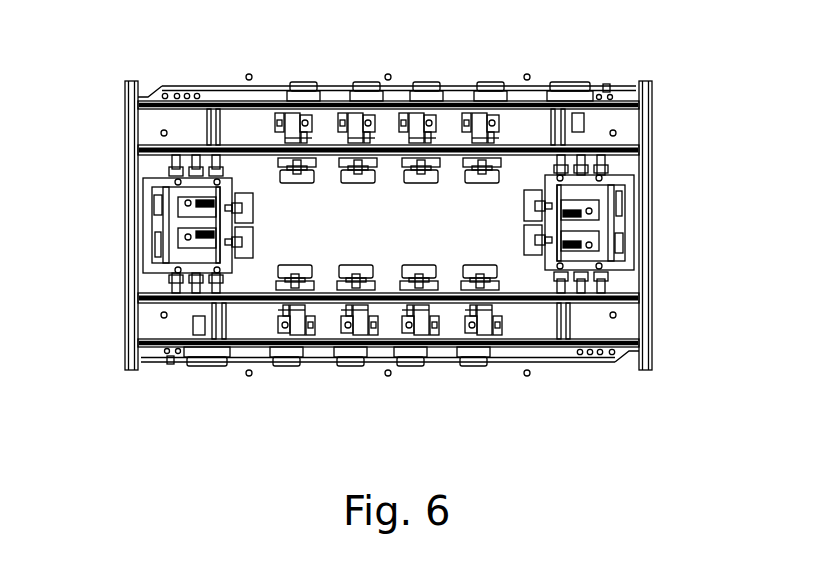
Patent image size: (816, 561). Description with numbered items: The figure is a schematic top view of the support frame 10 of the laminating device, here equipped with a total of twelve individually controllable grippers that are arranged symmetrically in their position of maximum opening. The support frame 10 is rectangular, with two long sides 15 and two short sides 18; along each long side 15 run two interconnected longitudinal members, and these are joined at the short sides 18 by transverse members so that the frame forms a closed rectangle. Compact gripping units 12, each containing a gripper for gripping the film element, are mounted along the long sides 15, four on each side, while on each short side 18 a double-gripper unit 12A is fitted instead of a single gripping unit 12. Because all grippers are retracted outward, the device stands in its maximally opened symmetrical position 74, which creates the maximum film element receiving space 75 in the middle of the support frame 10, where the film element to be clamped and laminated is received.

The support frame 10 is at (477, 417).
The gripping unit 12 is at (433, 358).
The double-gripper unit 12A is at (630, 224).
The long sides 15 is at (457, 84).
The short sides 18 is at (127, 197).
The maximally opened symmetrical position 74 is at (314, 394).
The film element receiving space 75 is at (400, 236).